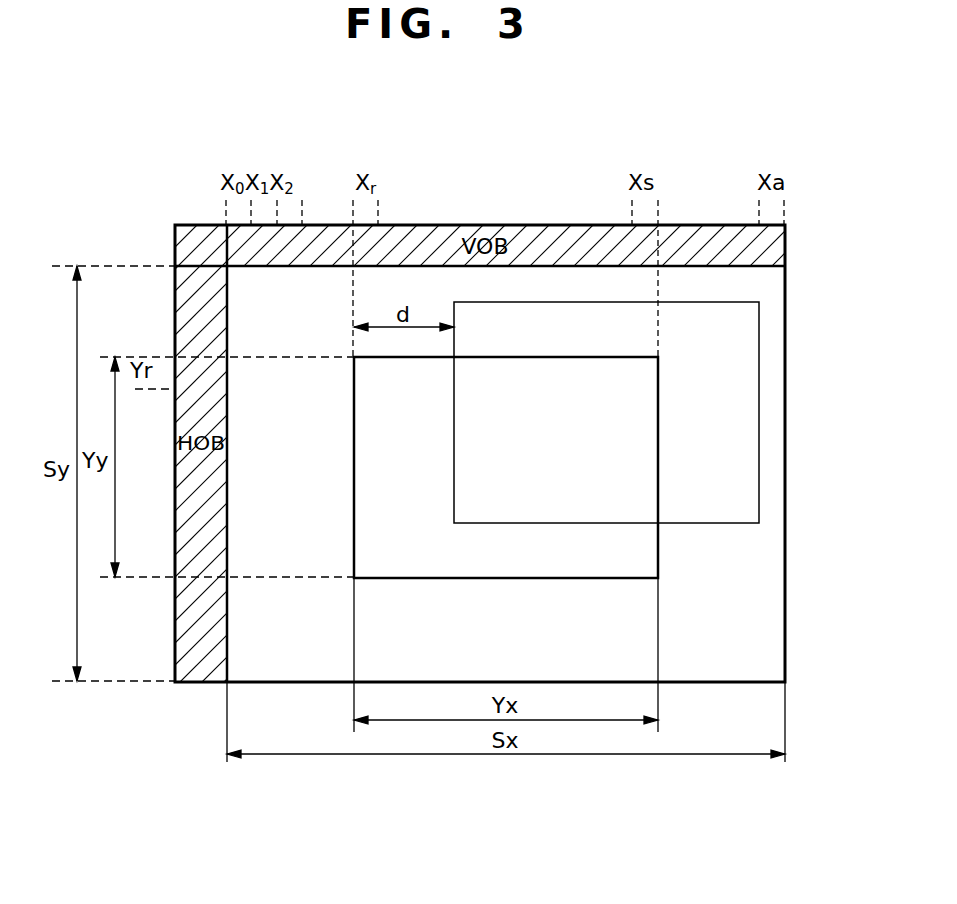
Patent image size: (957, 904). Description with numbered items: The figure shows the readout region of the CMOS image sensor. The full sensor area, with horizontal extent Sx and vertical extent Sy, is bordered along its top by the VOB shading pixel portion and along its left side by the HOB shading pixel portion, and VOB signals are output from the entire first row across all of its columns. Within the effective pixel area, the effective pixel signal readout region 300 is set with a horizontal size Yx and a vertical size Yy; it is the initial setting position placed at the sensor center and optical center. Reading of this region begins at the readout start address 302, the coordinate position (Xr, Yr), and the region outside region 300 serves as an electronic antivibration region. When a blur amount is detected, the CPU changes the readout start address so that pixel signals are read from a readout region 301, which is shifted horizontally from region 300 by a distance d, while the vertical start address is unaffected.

The effective pixel signal readout region 300 is at (378, 527).
The readout region 301 is at (713, 365).
The readout start address 302 is at (355, 328).